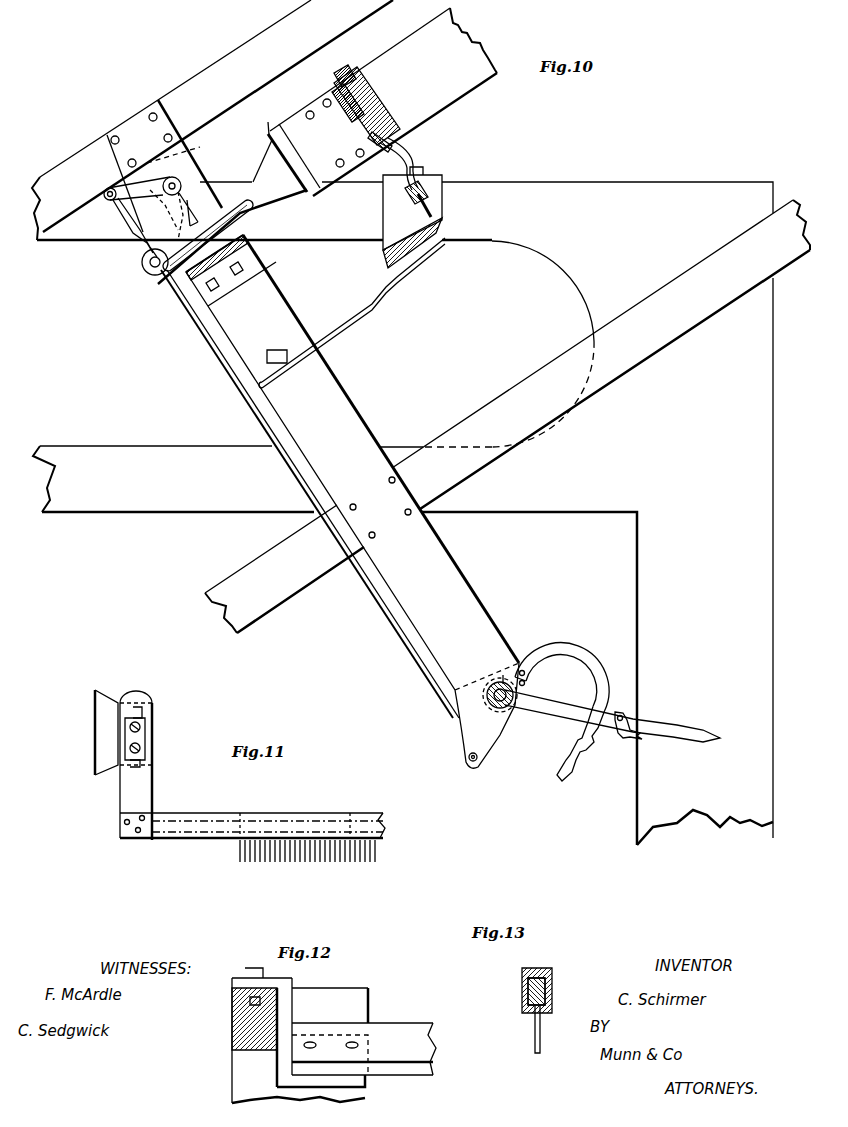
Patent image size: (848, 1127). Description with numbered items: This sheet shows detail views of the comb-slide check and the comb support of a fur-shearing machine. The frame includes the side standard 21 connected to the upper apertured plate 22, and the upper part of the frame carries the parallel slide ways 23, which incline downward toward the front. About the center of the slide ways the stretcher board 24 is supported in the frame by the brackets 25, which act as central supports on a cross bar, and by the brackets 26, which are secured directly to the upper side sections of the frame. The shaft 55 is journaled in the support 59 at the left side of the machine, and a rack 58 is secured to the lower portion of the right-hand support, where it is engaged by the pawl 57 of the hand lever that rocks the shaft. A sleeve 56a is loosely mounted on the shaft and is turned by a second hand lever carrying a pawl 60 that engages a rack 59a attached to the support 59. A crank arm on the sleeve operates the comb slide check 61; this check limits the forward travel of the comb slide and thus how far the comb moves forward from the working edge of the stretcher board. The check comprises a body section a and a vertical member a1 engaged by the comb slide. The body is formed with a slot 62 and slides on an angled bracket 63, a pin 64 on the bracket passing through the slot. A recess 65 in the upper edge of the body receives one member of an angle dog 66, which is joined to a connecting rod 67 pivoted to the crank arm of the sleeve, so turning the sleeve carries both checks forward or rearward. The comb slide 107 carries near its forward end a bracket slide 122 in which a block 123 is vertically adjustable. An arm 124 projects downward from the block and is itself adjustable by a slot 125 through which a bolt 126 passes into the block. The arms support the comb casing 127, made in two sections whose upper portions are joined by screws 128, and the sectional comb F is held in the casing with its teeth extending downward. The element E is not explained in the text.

In FIG. 10, the standard 21 is at (689, 615).
In FIG. 10, the upper apertured plate 22 is at (403, 513).
In FIG. 12, the upper apertured plate 22 is at (232, 1023).
In FIG. 10, the slide way 23 is at (421, 316).
In FIG. 10, the stretcher board 24 is at (440, 232).
In FIG. 12, the stretcher board 24 is at (364, 1049).
In FIG. 10, the bracket 25 is at (364, 311).
In FIG. 10, the bracket 26 is at (383, 213).
In FIG. 12, the bracket 26 is at (292, 1013).
In FIG. 10, the shaft 55 is at (503, 675).
In FIG. 10, the sleeve 56a is at (490, 690).
In FIG. 10, the end plate 57 is at (487, 712).
In FIG. 10, the rack 58 is at (574, 706).
In FIG. 10, the support 59 is at (352, 501).
In FIG. 10, the rack 59a is at (598, 662).
In FIG. 10, the pawl 60 is at (626, 742).
In FIG. 10, the comb slide check 61 is at (257, 178).
In FIG. 10, the slot 62 is at (160, 276).
In FIG. 10, the angled bracket 63 is at (188, 162).
In FIG. 10, the pin 64 is at (252, 248).
In FIG. 10, the recess 65 is at (188, 218).
In FIG. 10, the angle dog 66 is at (151, 209).
In FIG. 10, the connecting rod 67 is at (250, 395).
In FIG. 10, the comb slide 107 is at (382, 102).
In FIG. 11, the comb slide 107 is at (95, 713).
In FIG. 10, the bracket slide 122 is at (336, 80).
In FIG. 10, the block 123 is at (381, 106).
In FIG. 11, the block 123 is at (120, 703).
In FIG. 10, the arm 124 is at (407, 138).
In FIG. 11, the arm 124 is at (152, 788).
In FIG. 11, the slot 125 is at (142, 708).
In FIG. 11, the bolt 126 is at (145, 728).
In FIG. 10, the comb casing 127 is at (432, 187).
In FIG. 11, the comb casing 127 is at (252, 816).
In FIG. 13, the comb casing 127 is at (522, 996).
In FIG. 13, the screw 128 is at (535, 975).
In FIG. 10, the body section a is at (215, 230).
In FIG. 10, the vertical member a1 is at (260, 119).
In FIG. 10, the clamp E is at (420, 214).
In FIG. 11, the comb F is at (298, 840).
In FIG. 13, the comb F is at (512, 1027).